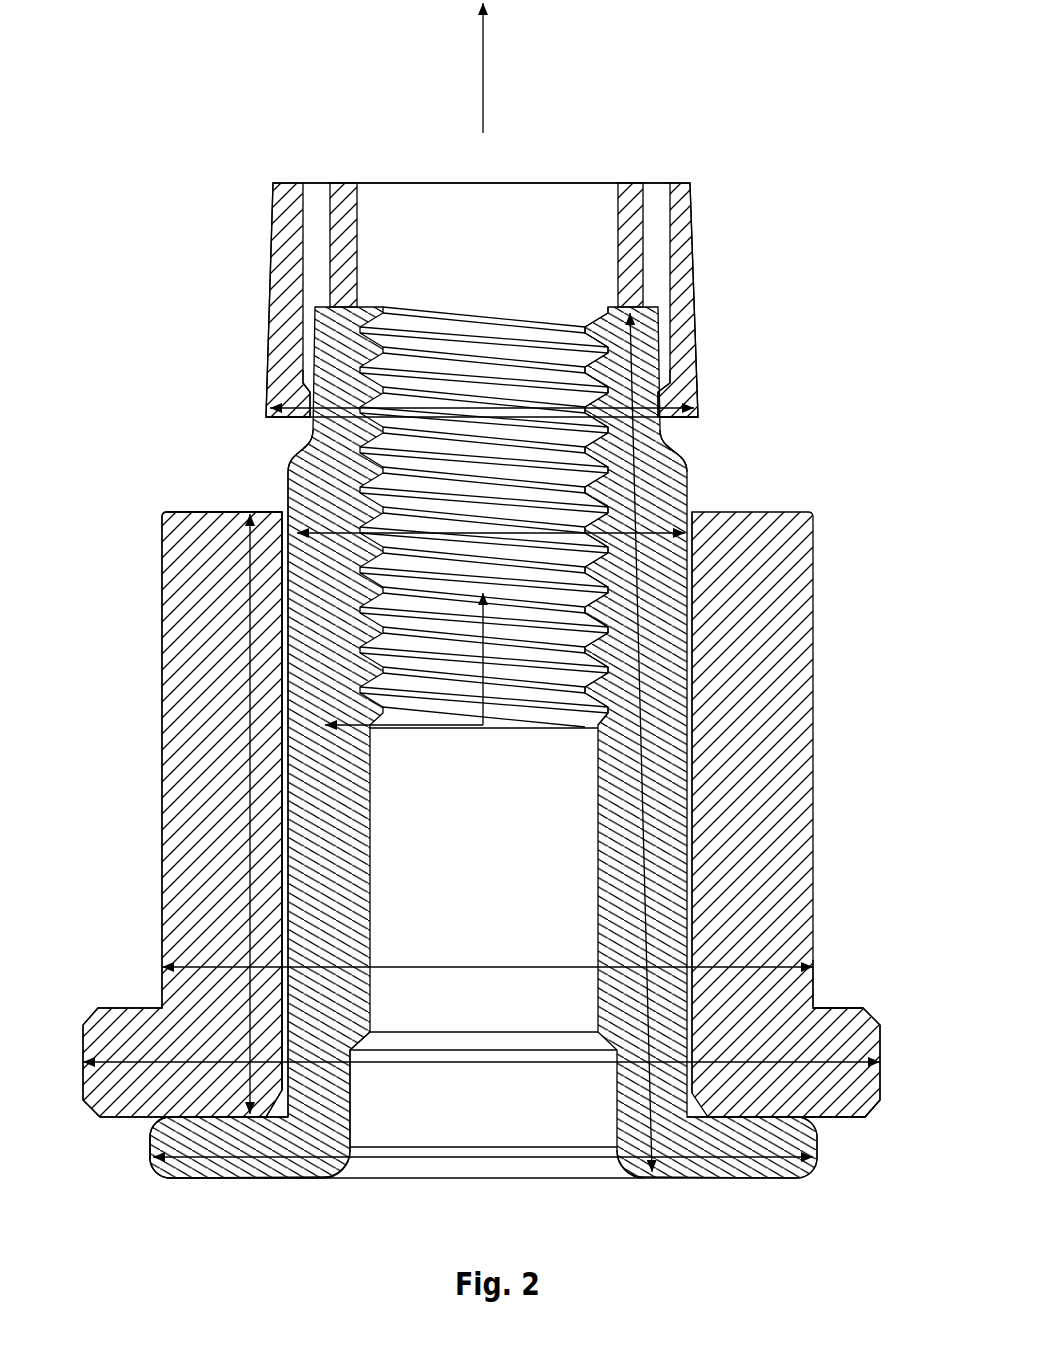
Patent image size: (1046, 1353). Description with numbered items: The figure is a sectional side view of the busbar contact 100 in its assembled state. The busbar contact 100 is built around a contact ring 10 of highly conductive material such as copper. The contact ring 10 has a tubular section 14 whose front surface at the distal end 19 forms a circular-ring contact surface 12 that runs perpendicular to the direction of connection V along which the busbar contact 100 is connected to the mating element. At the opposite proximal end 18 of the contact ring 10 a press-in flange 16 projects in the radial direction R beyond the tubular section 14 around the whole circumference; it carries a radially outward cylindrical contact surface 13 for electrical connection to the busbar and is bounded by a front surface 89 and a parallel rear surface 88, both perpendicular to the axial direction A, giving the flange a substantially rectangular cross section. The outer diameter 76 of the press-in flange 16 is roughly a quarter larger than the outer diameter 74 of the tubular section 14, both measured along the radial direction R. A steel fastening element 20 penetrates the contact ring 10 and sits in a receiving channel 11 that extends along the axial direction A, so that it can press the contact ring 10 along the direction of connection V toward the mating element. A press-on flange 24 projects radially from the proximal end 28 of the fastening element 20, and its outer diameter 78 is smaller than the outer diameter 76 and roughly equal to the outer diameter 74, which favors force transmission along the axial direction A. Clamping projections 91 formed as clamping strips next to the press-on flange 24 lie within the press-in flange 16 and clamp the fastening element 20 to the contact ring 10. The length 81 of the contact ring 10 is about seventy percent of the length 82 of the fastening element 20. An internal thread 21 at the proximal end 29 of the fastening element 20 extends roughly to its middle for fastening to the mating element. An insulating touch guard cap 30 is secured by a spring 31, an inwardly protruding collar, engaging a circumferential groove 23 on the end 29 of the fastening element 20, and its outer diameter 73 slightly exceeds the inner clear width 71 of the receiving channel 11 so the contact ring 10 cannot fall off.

The busbar contact 100 is at (190, 68).
The contact ring 10 is at (217, 802).
The receiving channel 11 is at (595, 668).
The contact surface 12 is at (228, 512).
The cylindrical contact surface 13 is at (887, 1057).
The tubular section 14 is at (780, 678).
The press-in flange 16 is at (847, 1027).
The proximal end 18 is at (120, 1137).
The distal end 19 is at (157, 497).
The fastening element 20 is at (335, 665).
The internal thread 21 is at (575, 460).
The circumferential groove 23 is at (712, 392).
The press-on flange 24 is at (230, 1148).
The proximal end 28 is at (707, 1197).
The distal end 29 is at (652, 250).
The touch guard cap 30 is at (293, 232).
The spring 31 is at (305, 385).
The inner clear width 71 is at (330, 527).
The outer diameter 73 is at (537, 410).
The outer diameter 74 is at (317, 970).
The outer diameter 76 is at (508, 1065).
The outer diameter 78 is at (760, 1157).
The length 81 is at (247, 742).
The length 82 is at (645, 800).
The rear surface 88 is at (847, 1117).
The front surface 89 is at (833, 1008).
The clamping projections 91 is at (285, 1040).
The axial direction A is at (690, 630).
The radial direction R is at (432, 730).
The direction of connection V is at (483, 67).